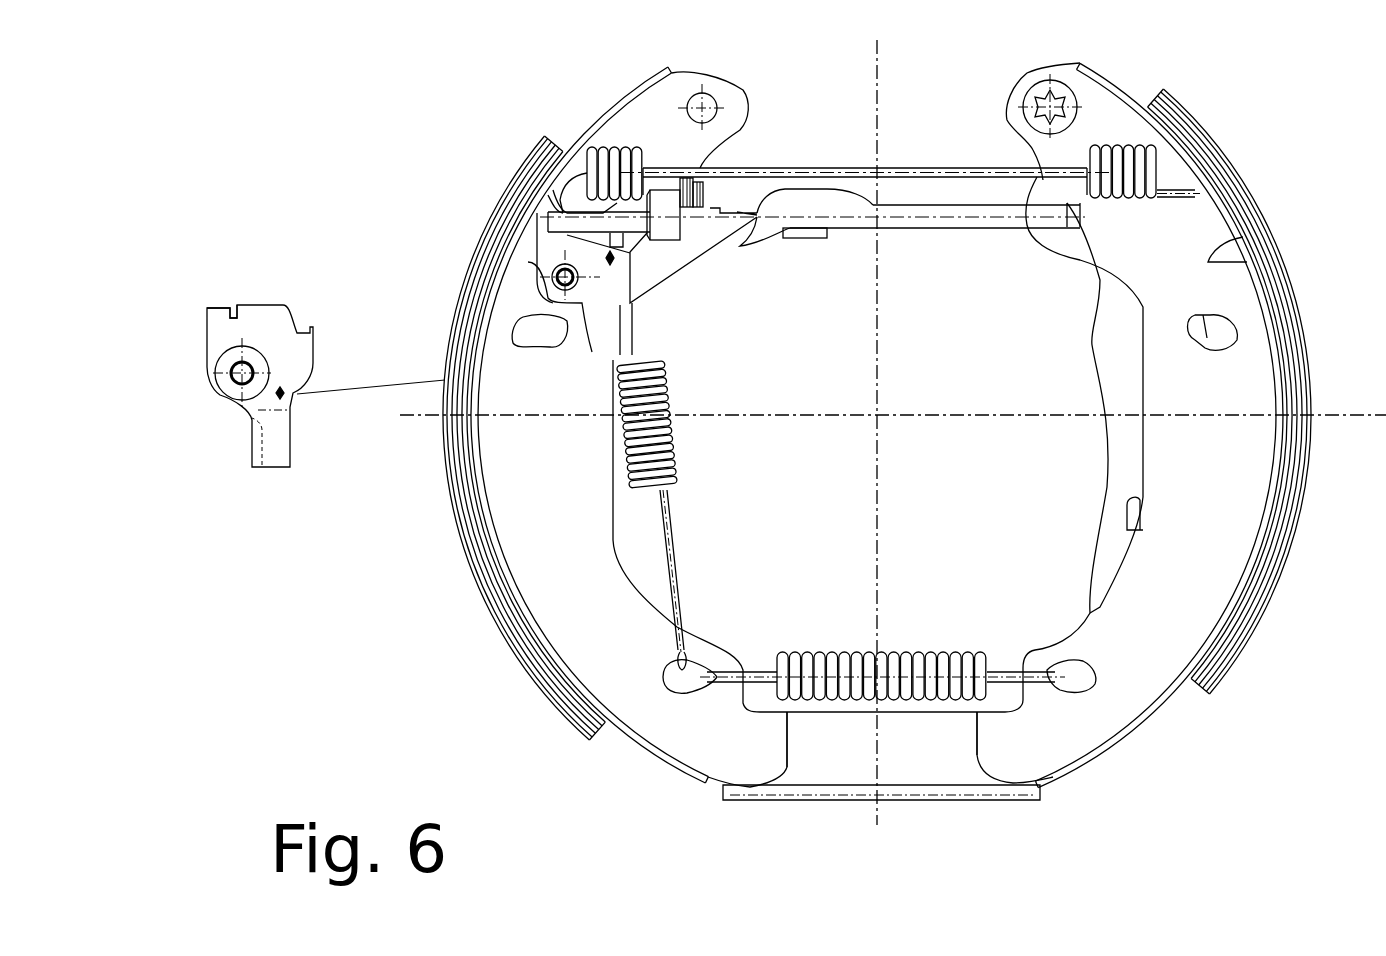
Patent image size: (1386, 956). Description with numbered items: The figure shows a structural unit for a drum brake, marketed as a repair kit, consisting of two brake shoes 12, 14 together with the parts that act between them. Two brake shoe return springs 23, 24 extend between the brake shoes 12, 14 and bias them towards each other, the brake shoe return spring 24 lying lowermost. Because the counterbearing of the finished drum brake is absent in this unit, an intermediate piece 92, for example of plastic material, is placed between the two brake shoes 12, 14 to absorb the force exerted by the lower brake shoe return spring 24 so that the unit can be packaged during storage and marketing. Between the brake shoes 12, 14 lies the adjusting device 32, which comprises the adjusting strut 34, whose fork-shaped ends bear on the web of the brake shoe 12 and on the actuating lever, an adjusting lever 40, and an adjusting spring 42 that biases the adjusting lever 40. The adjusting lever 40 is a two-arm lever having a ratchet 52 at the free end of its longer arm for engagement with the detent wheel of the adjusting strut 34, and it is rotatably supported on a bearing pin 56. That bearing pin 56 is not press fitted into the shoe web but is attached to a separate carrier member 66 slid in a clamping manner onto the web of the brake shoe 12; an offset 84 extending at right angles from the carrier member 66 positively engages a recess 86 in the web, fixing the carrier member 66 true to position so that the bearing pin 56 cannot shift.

The brake shoe 12 is at (458, 576).
The brake shoe 14 is at (1308, 294).
The brake shoe return spring 23 is at (627, 190).
The brake shoe return spring 24 is at (940, 653).
The adjusting device 32 is at (740, 303).
The adjusting strut 34 is at (896, 228).
The adjusting lever 40 is at (670, 260).
The adjusting spring 42 is at (677, 470).
The ratchet 52 is at (783, 168).
The bearing pin 56 is at (575, 300).
The carrier member 66 is at (272, 303).
The offset 84 is at (214, 303).
The recess 86 is at (547, 203).
The intermediate piece 92 is at (917, 763).